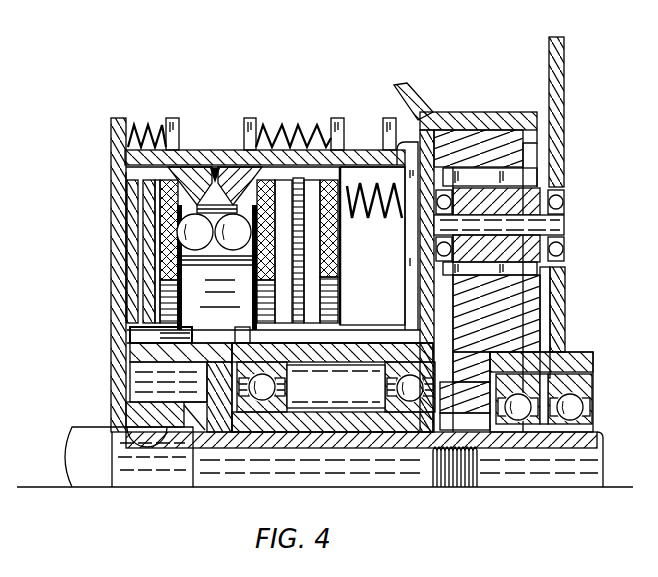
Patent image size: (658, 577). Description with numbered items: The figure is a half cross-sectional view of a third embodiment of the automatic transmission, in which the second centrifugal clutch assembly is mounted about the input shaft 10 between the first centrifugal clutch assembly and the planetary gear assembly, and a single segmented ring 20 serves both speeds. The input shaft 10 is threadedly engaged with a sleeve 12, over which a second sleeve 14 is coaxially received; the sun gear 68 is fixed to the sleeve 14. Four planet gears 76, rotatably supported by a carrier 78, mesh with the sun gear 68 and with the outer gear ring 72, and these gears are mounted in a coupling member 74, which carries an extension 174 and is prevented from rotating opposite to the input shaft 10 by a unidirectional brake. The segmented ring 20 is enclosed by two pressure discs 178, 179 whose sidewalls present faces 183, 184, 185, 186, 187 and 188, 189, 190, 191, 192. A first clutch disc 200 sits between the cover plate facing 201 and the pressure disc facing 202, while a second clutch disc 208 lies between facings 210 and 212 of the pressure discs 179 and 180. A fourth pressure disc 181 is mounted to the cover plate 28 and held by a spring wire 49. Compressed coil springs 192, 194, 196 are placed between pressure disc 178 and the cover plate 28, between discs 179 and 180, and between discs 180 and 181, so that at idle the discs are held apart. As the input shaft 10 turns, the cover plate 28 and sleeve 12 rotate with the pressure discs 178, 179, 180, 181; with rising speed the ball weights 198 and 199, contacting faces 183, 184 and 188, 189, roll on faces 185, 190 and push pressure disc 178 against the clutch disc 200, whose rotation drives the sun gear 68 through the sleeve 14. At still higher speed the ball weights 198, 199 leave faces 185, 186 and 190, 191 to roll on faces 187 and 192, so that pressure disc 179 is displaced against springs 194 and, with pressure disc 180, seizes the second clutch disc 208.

The input shaft 10 is at (73, 430).
The sleeve 12 is at (358, 450).
The second sleeve 14 is at (358, 438).
The segmented ring 20 is at (132, 323).
The cover plate 28 is at (112, 377).
The spring wire 49 is at (425, 113).
The sun gear 68 is at (541, 333).
The outer gear ring 72 is at (490, 115).
The coupling member 74 is at (413, 72).
The planet gears 76 is at (540, 182).
The carrier 78 is at (564, 113).
The extension 174 is at (307, 378).
The pressure disc 178 is at (172, 118).
The pressure disc 179 is at (263, 127).
The pressure disc 180 is at (338, 122).
The fourth pressure disc 181 is at (398, 143).
The face 183 is at (132, 337).
The face 184 is at (150, 195).
The face 185 is at (168, 190).
The face 186 is at (200, 183).
The face 187 is at (200, 167).
The face 188 is at (255, 317).
The face 189 is at (254, 118).
The face 190 is at (237, 163).
The face 191 is at (222, 165).
The compressed coil spring 192 is at (210, 170).
The compressed coil spring 194 is at (312, 130).
The compressed coil spring 196 is at (398, 222).
The ball weight 198 is at (175, 268).
The ball weight 199 is at (187, 317).
The first clutch disc 200 is at (140, 262).
The cover plate facing 201 is at (113, 240).
The pressure disc facing 202 is at (157, 227).
The second clutch disc 208 is at (300, 329).
The facing 210 is at (310, 313).
The facing 212 is at (282, 277).